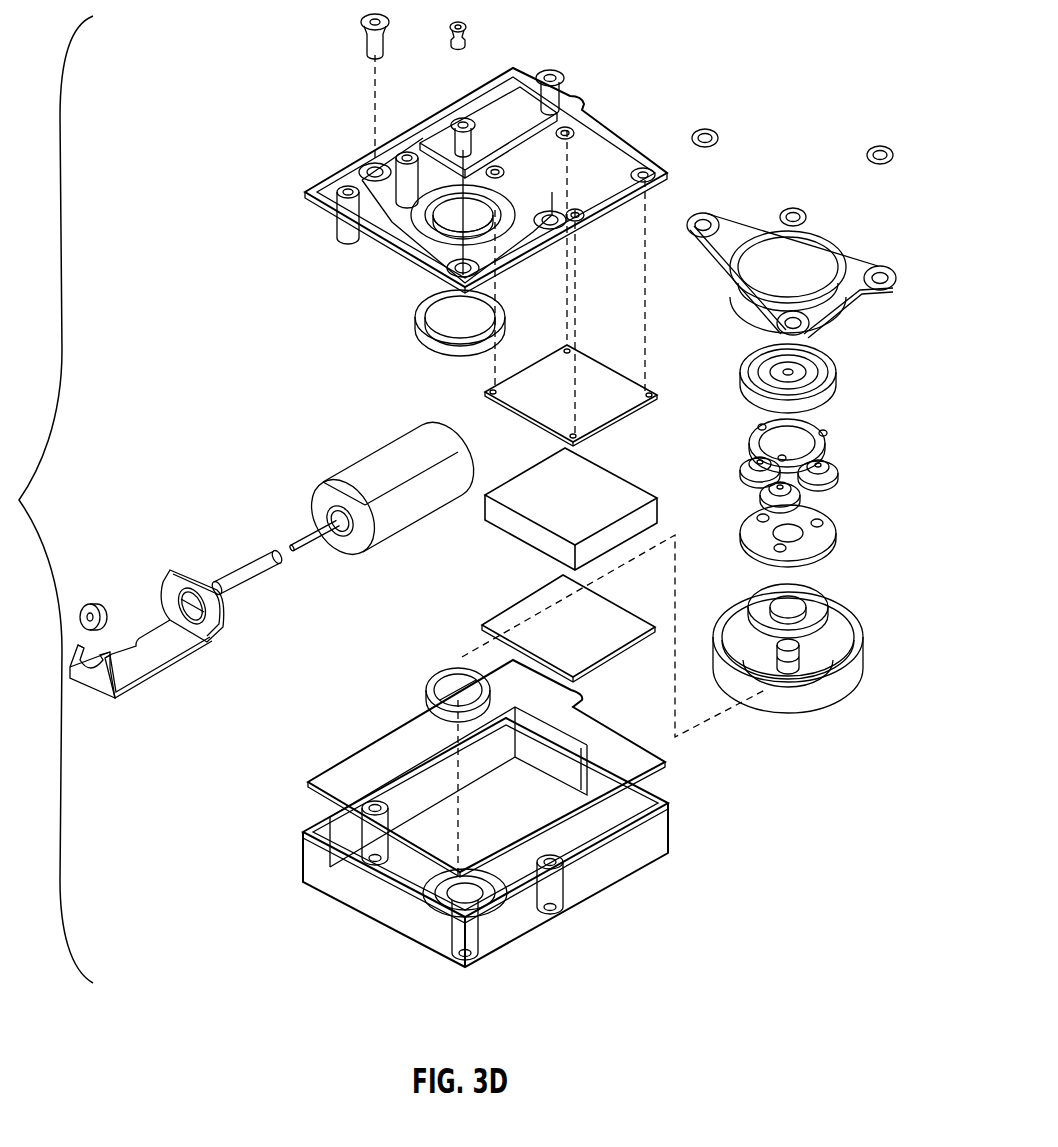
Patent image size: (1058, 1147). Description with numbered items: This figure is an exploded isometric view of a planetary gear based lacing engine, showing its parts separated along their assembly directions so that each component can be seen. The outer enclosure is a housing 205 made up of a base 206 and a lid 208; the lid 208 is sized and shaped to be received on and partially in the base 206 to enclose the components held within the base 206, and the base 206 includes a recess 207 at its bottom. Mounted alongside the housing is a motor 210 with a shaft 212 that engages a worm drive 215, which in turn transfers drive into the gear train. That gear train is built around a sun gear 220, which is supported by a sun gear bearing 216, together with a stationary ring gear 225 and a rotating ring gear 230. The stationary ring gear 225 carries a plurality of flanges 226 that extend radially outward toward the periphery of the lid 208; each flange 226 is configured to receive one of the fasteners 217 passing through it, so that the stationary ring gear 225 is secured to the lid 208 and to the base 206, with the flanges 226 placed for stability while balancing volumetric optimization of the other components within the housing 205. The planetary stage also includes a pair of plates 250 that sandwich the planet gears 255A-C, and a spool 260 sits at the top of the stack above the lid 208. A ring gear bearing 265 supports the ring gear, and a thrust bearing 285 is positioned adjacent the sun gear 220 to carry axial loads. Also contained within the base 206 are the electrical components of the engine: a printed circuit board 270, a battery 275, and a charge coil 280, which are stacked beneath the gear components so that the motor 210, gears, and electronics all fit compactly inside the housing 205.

The housing 205 is at (285, 858).
The base 206 is at (355, 898).
The recess 207 is at (450, 887).
The lid 208 is at (598, 142).
The motor 210 is at (363, 475).
The shaft 212 is at (313, 533).
The worm drive 215 is at (260, 562).
The sun gear bearing 216 is at (427, 693).
The fasteners 217 is at (362, 37).
The sun gear 220 is at (850, 673).
The stationary ring gear 225 is at (840, 243).
The flanges 226 is at (705, 218).
The rotating ring gear 230 is at (838, 382).
The pair of plates 250 is at (830, 443).
The planet gears 255A-C is at (742, 480).
The spool 260 is at (470, 40).
The ring gear bearing 265 is at (413, 330).
The printed circuit board 270 is at (483, 393).
The battery 275 is at (510, 543).
The charge coil 280 is at (497, 620).
The thrust bearing 285 is at (812, 596).